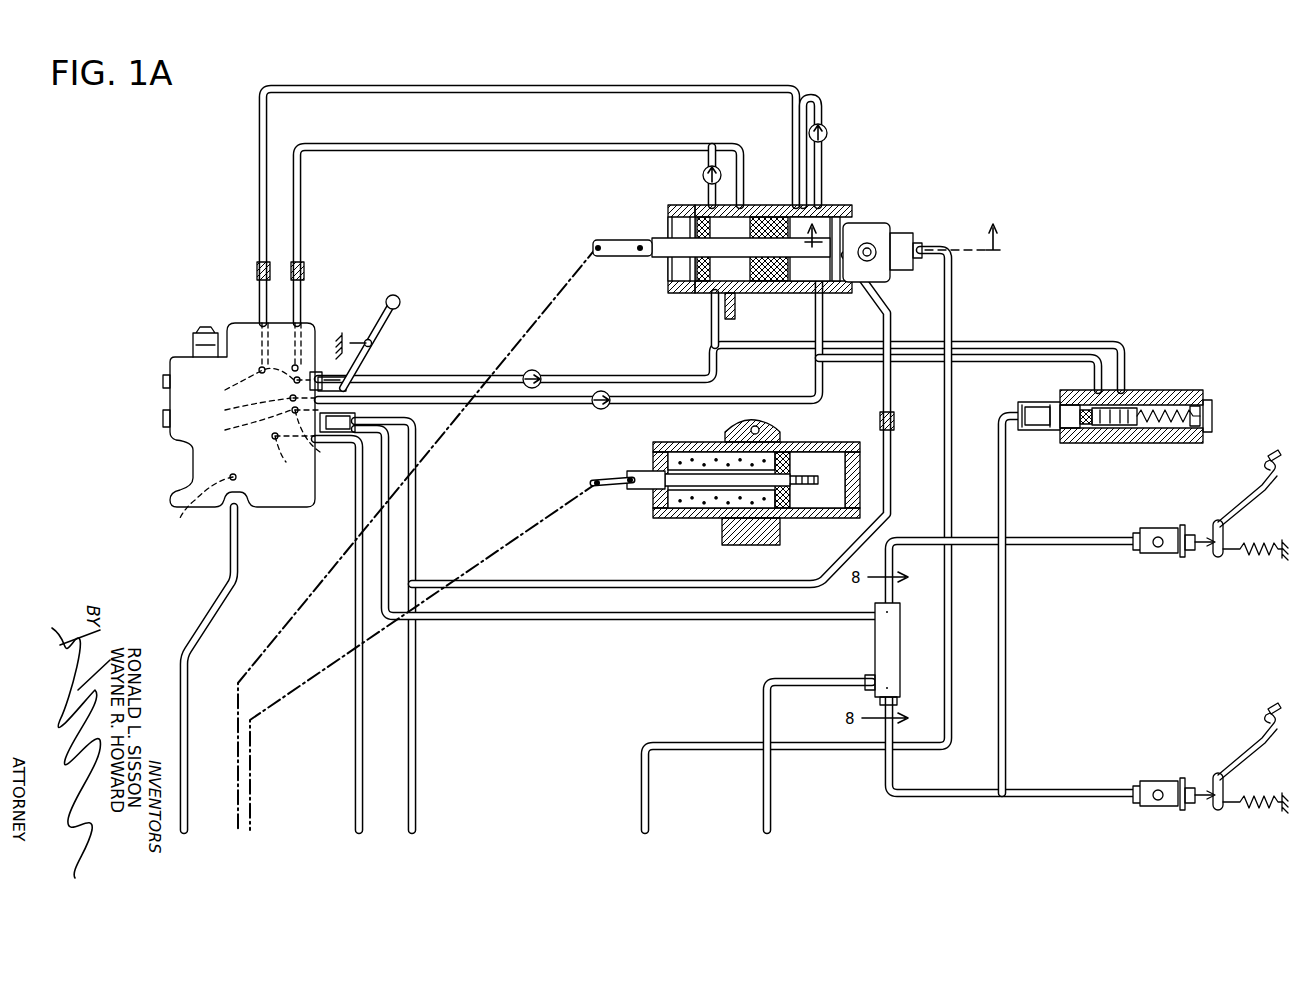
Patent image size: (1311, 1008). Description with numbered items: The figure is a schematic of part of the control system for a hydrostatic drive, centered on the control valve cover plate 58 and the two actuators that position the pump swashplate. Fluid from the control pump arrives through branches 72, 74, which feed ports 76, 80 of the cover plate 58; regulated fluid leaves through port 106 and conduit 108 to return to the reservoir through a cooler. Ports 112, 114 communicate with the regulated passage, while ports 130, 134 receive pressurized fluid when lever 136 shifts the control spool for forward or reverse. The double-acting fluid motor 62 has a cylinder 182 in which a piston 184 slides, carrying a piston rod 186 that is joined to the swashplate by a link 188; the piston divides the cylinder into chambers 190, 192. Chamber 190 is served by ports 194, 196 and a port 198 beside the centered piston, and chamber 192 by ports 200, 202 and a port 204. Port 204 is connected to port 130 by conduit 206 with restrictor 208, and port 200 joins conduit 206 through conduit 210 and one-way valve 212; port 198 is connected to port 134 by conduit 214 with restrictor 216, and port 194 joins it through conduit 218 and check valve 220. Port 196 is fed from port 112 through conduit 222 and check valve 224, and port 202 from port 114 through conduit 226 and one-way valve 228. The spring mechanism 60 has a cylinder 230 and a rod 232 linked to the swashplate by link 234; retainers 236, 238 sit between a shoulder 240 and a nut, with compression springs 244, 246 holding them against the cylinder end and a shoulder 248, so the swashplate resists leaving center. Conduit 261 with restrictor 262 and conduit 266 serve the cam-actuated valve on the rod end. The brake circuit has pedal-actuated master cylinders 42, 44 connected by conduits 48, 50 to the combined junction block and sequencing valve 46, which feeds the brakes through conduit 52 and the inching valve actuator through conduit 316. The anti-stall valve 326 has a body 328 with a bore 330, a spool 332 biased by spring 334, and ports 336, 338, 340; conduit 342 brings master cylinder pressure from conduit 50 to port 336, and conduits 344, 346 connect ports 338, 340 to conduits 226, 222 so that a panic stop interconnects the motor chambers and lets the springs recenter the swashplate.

The pedal-actuated master cylinder 42 is at (1157, 528).
The pedal-actuated master cylinder 44 is at (1160, 780).
The combined junction block and sequencing valve 46 is at (880, 645).
The fluid conduit 48 is at (1030, 538).
The fluid conduit 50 is at (1045, 790).
The conduit 52 is at (760, 705).
The control valve cover plate 58 is at (160, 355).
The spring-loaded mechanism 60 is at (706, 491).
The double-acting fluid motor 62 is at (797, 243).
The branch 72 is at (360, 740).
The branch 74 is at (416, 742).
The port 76 is at (293, 456).
The port 80 is at (323, 440).
The port 106 is at (201, 501).
The fluid conduit 108 is at (230, 560).
The port 112 is at (243, 409).
The port 114 is at (243, 425).
The port 130 is at (244, 384).
The port 134 is at (308, 342).
The lever 136 is at (384, 305).
The cylinder 182 is at (748, 296).
The piston 184 is at (765, 290).
The piston rod 186 is at (658, 240).
The link 188 is at (610, 257).
The chamber 190 is at (730, 270).
The chamber 192 is at (860, 280).
The port 194 is at (708, 207).
The port 196 is at (690, 290).
The port 198 is at (740, 200).
The port 200 is at (818, 200).
The port 202 is at (822, 297).
The port 204 is at (792, 185).
The conduit 206 is at (259, 142).
The fluid flow restrictor 208 is at (257, 264).
The conduit 210 is at (818, 98).
The one-way valve 212 is at (826, 130).
The conduit 214 is at (486, 152).
The fluid flow restrictor 216 is at (304, 264).
The conduit 218 is at (704, 170).
The one-way check valve 220 is at (718, 170).
The conduit 222 is at (446, 375).
The one-way check valve 224 is at (540, 372).
The conduit 226 is at (494, 405).
The one-way valve 228 is at (592, 408).
The cylinder 230 is at (815, 518).
The rod 232 is at (722, 520).
The link 234 is at (610, 490).
The spring retainer 236 is at (658, 462).
The spring retainer 238 is at (795, 445).
The shoulder 240 is at (660, 498).
The compression spring 244 is at (700, 442).
The compression spring 246 is at (748, 432).
The shoulder 248 is at (778, 520).
The conduit 261 is at (890, 480).
The fluid flow restrictor 262 is at (895, 418).
The conduit 266 is at (955, 300).
The conduit 316 is at (552, 625).
The valve 326 is at (1127, 391).
The body 328 is at (1185, 388).
The bore 330 is at (1092, 432).
The spool 332 is at (1133, 430).
The compression spring 334 is at (1195, 432).
The port 336 is at (1040, 430).
The port 338 is at (1096, 385).
The port 340 is at (1123, 385).
The conduit 342 is at (1010, 650).
The conduit 344 is at (905, 365).
The conduit 346 is at (990, 350).